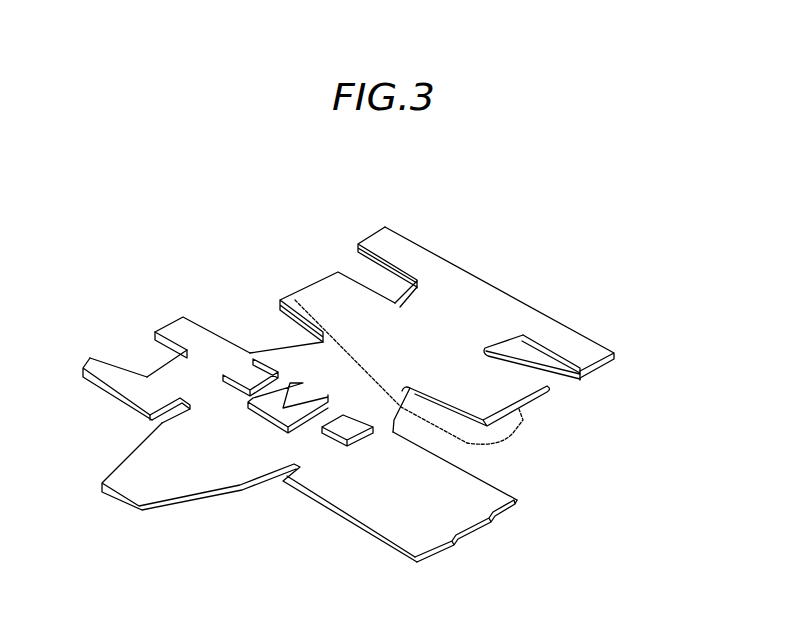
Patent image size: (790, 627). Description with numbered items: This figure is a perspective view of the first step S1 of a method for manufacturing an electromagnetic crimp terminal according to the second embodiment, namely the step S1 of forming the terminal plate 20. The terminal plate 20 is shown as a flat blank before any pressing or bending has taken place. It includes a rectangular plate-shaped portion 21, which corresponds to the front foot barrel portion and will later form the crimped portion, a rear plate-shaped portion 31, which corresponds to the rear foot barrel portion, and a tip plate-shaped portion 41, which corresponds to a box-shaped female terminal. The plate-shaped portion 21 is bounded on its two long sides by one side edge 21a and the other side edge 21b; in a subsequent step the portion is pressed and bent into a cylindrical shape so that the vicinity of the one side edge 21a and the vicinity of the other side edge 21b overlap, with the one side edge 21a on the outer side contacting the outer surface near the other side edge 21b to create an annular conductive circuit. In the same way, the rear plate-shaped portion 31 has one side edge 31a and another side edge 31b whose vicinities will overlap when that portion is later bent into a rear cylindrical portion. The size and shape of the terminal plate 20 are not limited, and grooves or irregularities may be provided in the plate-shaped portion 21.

The terminal plate 20 is at (490, 172).
The plate-shaped portion 21 is at (398, 333).
The one side edge 21a is at (307, 343).
The other side edge 21b is at (312, 282).
The rear plate-shaped portion 31 is at (467, 300).
The one side edge 31a is at (613, 372).
The other side edge 31b is at (380, 226).
The tip plate-shaped portion 41 is at (247, 428).
The step of forming a terminal plate S1 is at (82, 243).